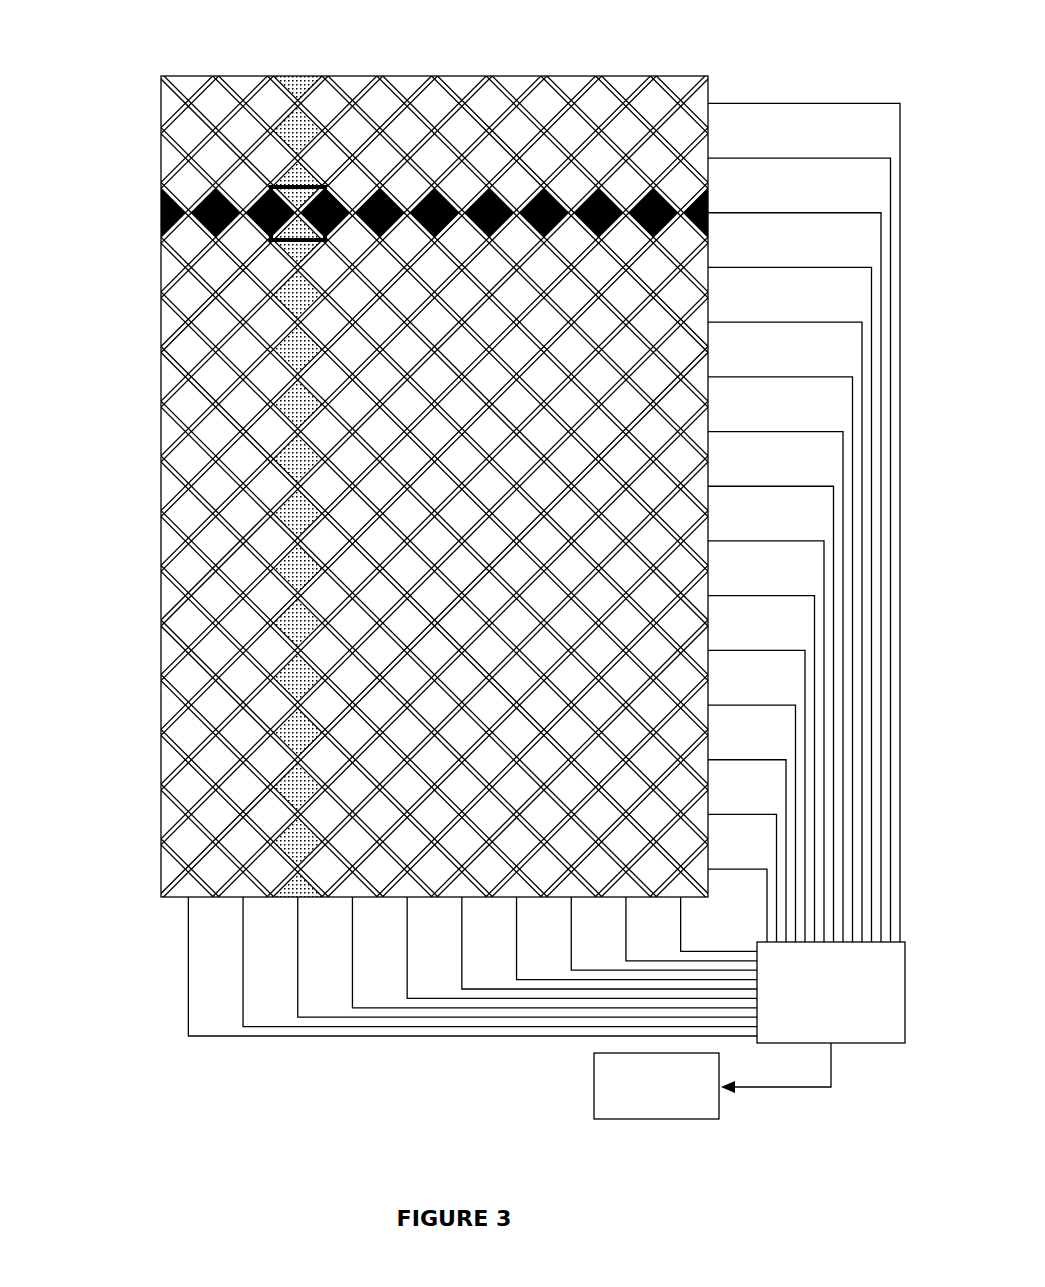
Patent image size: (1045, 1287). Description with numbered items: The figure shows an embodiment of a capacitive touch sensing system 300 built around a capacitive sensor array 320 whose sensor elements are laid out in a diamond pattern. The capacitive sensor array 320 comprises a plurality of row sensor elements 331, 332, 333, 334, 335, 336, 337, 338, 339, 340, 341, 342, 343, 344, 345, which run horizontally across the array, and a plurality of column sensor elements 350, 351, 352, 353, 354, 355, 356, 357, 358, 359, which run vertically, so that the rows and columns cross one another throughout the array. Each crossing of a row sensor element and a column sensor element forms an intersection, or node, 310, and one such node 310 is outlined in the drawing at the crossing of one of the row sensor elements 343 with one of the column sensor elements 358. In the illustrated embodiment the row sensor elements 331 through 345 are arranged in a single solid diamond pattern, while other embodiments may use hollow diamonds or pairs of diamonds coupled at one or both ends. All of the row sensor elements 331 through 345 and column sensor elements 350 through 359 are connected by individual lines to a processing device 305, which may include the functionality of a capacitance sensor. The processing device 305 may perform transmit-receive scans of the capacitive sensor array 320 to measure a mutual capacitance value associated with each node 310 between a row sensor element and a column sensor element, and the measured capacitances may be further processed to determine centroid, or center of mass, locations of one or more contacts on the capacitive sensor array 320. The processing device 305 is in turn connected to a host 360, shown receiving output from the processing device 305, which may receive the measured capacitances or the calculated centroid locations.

The capacitive touch sensing system 300 is at (75, 33).
The processing device 305 is at (813, 1023).
The intersection (node) 310 is at (268, 186).
The capacitive sensor array 320 is at (562, 76).
The row sensor element 331 is at (737, 892).
The row sensor element 332 is at (742, 864).
The row sensor element 333 is at (747, 837).
The row sensor element 334 is at (752, 810).
The row sensor element 335 is at (756, 782).
The row sensor element 336 is at (761, 755).
The row sensor element 337 is at (766, 728).
The row sensor element 338 is at (771, 700).
The row sensor element 339 is at (775, 673).
The row sensor element 340 is at (780, 646).
The row sensor element 341 is at (785, 618).
The row sensor element 342 is at (790, 591).
The row sensor element 343 is at (509, 564).
The row sensor element 344 is at (799, 536).
The row sensor element 345 is at (804, 509).
The column sensor element 350 is at (719, 924).
The column sensor element 351 is at (691, 929).
The column sensor element 352 is at (664, 933).
The column sensor element 353 is at (637, 938).
The column sensor element 354 is at (609, 943).
The column sensor element 355 is at (582, 947).
The column sensor element 356 is at (554, 952).
The column sensor element 357 is at (527, 957).
The column sensor element 358 is at (500, 962).
The column sensor element 359 is at (472, 966).
The host 360 is at (675, 1110).